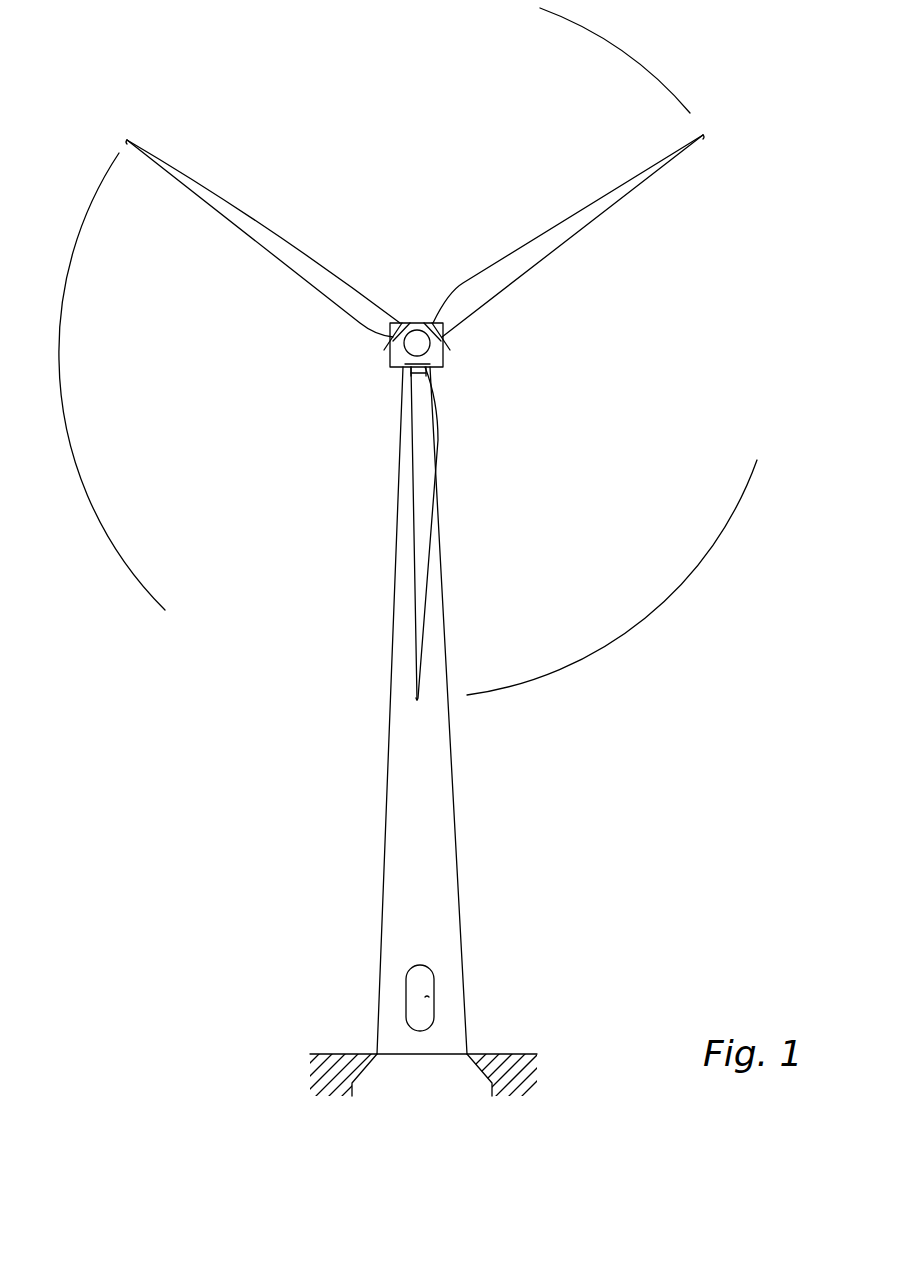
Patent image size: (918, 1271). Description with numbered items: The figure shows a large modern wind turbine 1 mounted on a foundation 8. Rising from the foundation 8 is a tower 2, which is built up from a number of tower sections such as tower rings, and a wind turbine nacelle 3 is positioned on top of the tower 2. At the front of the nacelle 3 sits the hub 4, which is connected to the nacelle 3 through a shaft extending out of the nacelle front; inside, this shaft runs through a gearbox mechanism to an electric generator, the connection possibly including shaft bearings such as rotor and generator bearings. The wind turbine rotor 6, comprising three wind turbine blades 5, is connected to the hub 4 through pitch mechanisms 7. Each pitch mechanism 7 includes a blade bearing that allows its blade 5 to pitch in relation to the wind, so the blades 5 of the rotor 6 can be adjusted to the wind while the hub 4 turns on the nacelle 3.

The wind turbine 1 is at (368, 888).
The tower 2 is at (446, 782).
The wind turbine nacelle 3 is at (443, 363).
The hub 4 is at (418, 337).
The wind turbine blade 5 is at (422, 568).
The wind turbine rotor 6 is at (663, 566).
The pitch mechanism 7 is at (393, 342).
The foundation 8 is at (360, 1082).